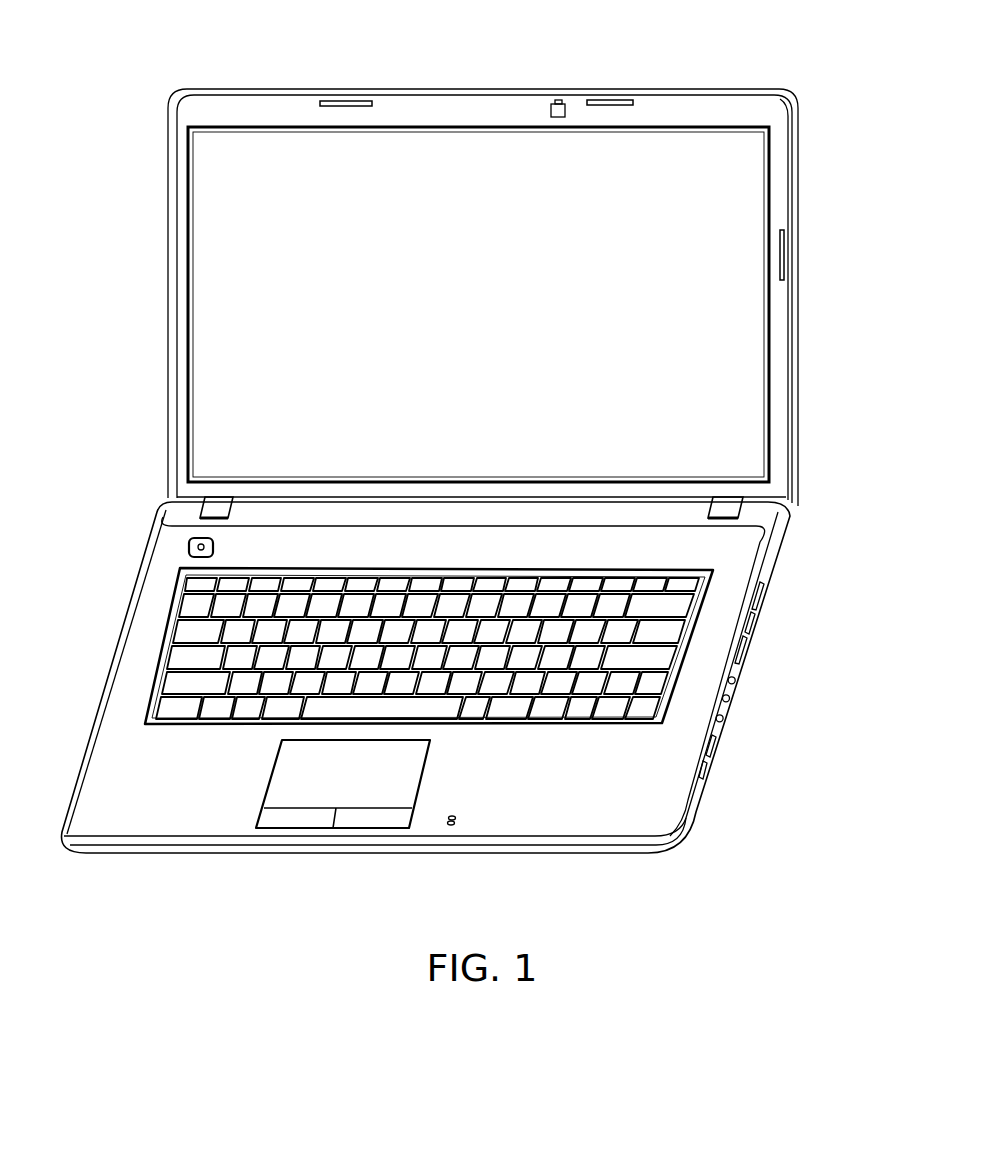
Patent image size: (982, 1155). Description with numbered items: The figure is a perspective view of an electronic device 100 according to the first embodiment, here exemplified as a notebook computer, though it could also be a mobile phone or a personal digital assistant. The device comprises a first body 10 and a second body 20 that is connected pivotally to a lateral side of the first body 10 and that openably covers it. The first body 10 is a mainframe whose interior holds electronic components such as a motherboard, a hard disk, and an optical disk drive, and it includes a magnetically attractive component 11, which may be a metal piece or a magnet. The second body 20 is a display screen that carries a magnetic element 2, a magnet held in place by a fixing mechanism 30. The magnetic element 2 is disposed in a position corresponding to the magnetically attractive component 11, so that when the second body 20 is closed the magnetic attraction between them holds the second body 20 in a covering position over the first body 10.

The electronic device 100 is at (472, 430).
The first body 10 is at (442, 675).
The magnetically attractive component 11 is at (456, 812).
The second body 20 is at (524, 256).
The magnetic element 2 is at (554, 102).
The fixing mechanism 30 is at (568, 114).